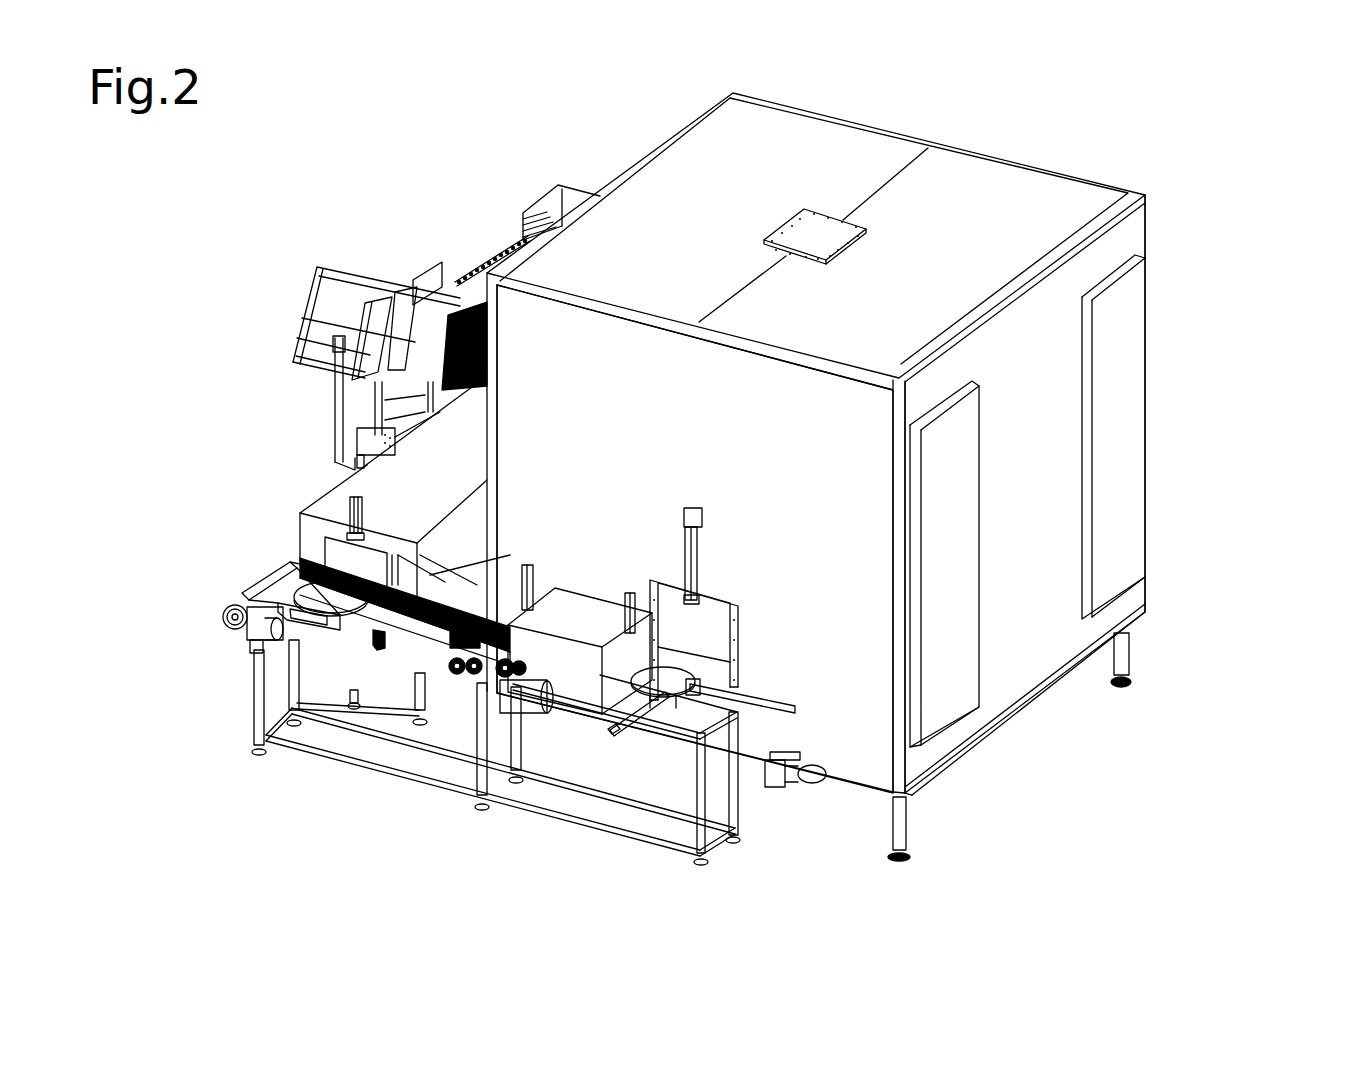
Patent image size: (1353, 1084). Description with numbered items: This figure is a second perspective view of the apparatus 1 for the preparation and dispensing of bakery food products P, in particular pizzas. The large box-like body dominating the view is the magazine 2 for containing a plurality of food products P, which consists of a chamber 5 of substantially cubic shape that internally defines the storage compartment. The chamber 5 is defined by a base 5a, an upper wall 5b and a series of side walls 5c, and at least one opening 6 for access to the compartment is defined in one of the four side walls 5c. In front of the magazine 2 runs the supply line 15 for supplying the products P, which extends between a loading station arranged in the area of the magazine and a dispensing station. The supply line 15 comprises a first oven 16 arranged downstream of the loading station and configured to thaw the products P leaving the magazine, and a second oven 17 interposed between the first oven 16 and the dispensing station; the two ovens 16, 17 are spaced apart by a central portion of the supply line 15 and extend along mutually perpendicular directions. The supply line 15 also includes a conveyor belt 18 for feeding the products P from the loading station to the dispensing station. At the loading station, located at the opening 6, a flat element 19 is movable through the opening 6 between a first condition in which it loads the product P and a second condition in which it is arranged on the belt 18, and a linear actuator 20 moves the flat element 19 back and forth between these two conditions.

The apparatus 1 is at (1062, 845).
The magazine 2 is at (1142, 166).
The chamber 5 is at (1142, 342).
The base 5a is at (1030, 712).
The upper wall 5b is at (1013, 203).
The side walls 5c is at (557, 327).
The opening 6 is at (717, 623).
The supply line 15 is at (278, 497).
The first oven 16 is at (582, 660).
The second oven 17 is at (362, 482).
The conveyor belt 18 is at (405, 664).
The flat element 19 is at (672, 717).
The linear actuator 20 is at (633, 737).
The food products P is at (332, 597).